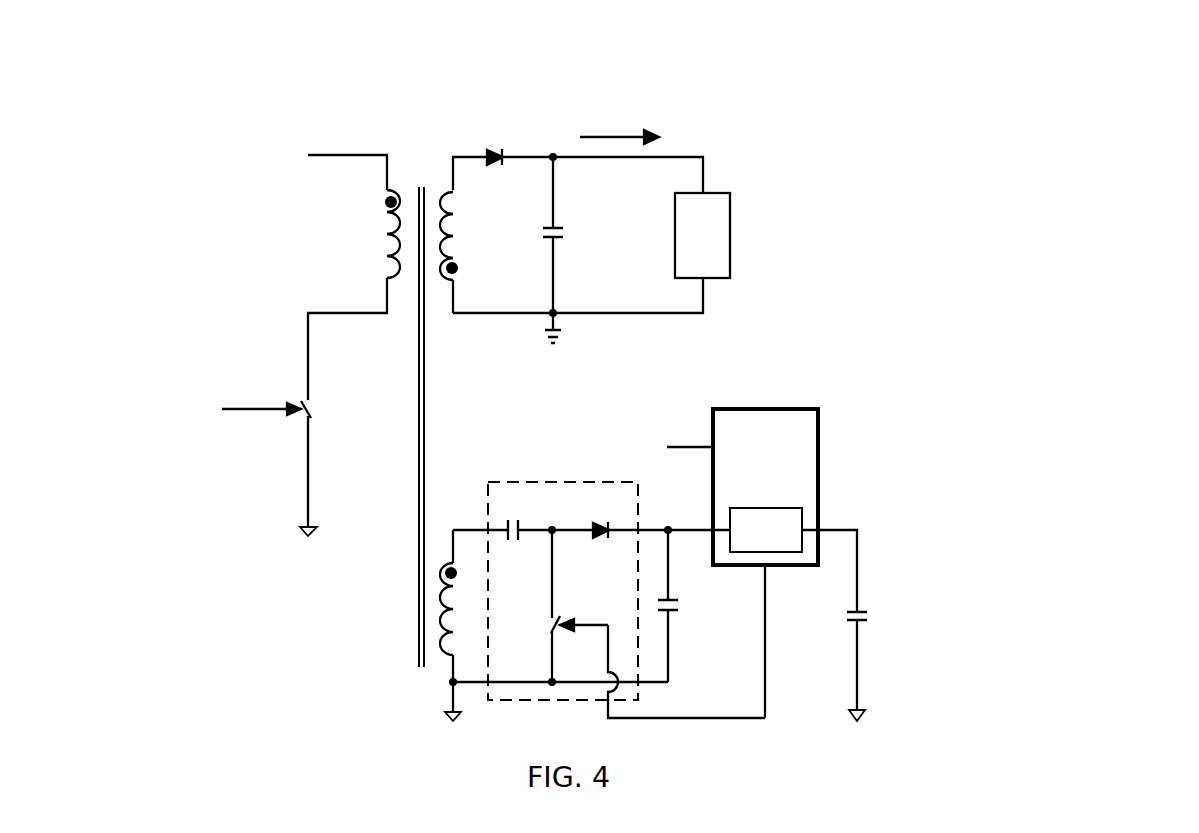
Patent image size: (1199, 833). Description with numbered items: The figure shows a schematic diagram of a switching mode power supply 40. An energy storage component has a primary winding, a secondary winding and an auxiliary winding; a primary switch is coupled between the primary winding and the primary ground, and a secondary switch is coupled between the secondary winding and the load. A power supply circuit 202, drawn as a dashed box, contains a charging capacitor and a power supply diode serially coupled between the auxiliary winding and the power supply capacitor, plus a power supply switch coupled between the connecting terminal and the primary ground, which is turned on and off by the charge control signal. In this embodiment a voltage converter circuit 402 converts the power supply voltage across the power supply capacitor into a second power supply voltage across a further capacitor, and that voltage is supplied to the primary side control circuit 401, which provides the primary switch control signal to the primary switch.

The switching mode power supply 40 is at (770, 72).
The power supply circuit 202 is at (527, 481).
The primary side control circuit 401 is at (765, 563).
The voltage converter circuit 402 is at (766, 530).